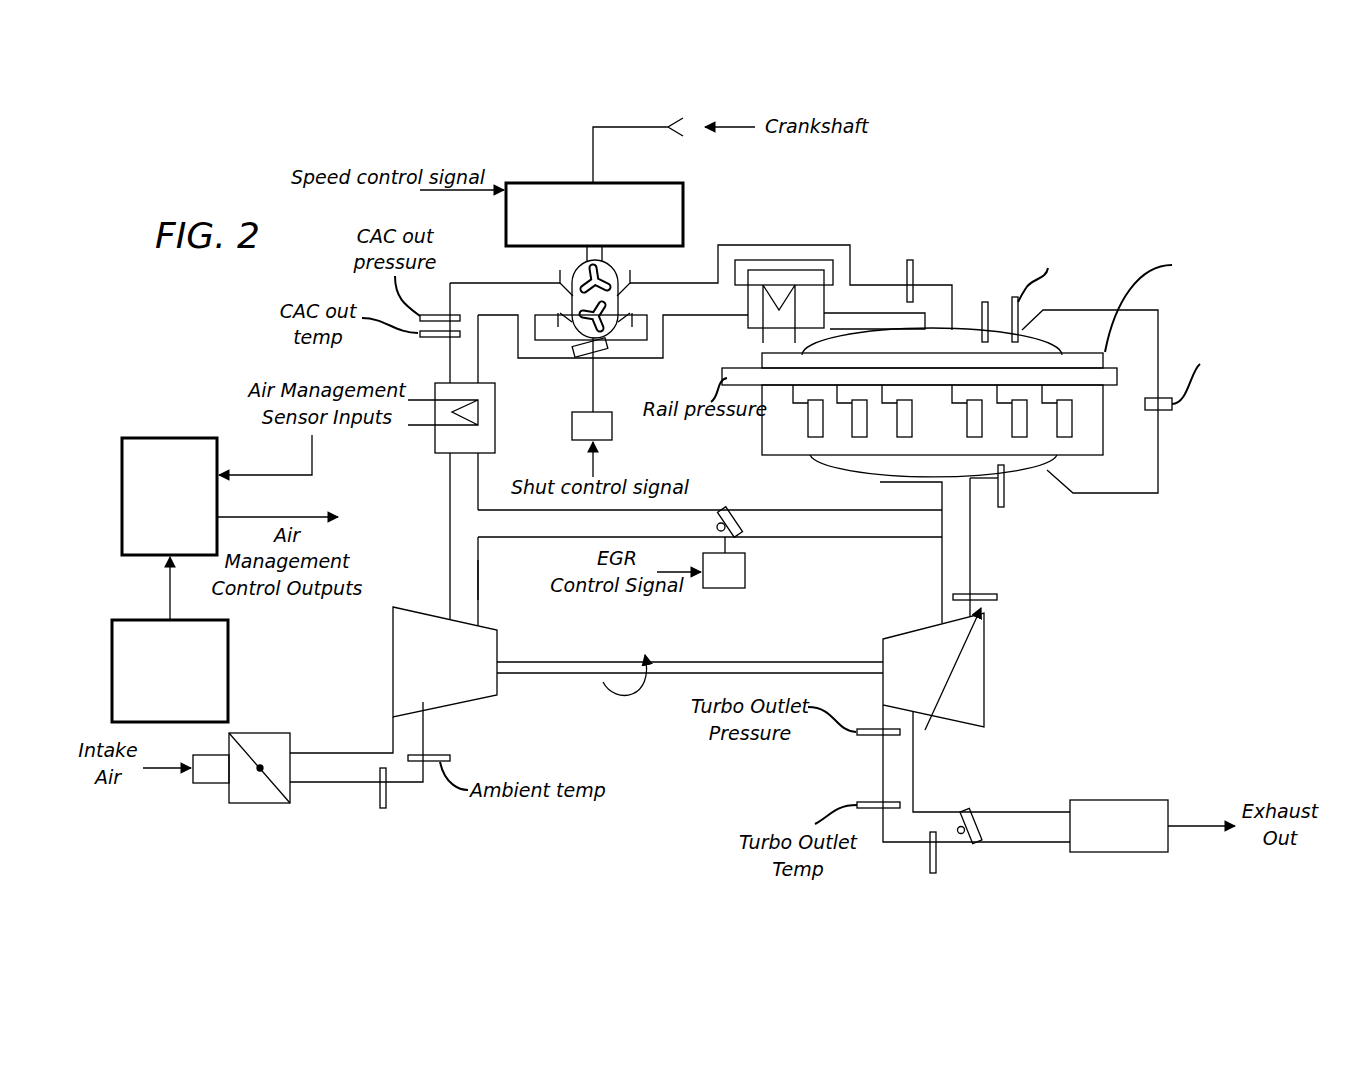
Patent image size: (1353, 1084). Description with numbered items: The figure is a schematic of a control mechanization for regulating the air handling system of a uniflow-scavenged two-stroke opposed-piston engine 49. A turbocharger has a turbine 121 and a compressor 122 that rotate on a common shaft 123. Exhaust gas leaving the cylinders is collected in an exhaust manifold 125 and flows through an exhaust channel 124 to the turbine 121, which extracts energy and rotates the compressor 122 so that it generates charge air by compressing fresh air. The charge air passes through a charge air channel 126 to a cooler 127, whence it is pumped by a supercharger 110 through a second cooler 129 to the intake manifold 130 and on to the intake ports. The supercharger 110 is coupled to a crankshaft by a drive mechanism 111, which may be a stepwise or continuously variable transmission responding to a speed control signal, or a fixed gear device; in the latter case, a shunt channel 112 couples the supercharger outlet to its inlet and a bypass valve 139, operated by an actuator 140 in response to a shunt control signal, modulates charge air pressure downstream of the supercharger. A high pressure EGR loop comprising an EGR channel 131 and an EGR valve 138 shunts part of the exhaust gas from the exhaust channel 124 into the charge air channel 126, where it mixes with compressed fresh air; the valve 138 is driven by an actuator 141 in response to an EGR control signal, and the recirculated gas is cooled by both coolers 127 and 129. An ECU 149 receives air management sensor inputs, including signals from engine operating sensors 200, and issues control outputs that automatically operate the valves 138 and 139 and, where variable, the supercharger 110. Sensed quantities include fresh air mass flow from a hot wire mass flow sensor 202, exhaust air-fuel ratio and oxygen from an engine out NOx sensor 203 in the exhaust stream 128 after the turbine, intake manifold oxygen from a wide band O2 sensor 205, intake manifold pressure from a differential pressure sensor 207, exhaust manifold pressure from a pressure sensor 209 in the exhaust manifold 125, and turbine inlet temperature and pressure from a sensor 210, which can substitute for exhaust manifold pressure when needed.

The opposed-piston engine 49 is at (1162, 196).
The supercharger 110 is at (608, 262).
The drive mechanism 111 is at (620, 183).
The shunt channel 112 is at (542, 358).
The turbine 121 is at (905, 634).
The compressor 122 is at (390, 666).
The common shaft 123 is at (752, 662).
The exhaust channel 124 is at (976, 536).
The exhaust manifold 125 is at (840, 479).
The charge air channel 126 is at (483, 557).
The cooler 127 is at (495, 418).
The exhaust stream 128 is at (1055, 812).
The cooler 129 is at (748, 320).
The intake manifold 130 is at (1022, 306).
The EGR channel 131 is at (847, 537).
The EGR valve 138 is at (737, 528).
The bypass valve 139 is at (603, 353).
The actuator 140 is at (612, 430).
The actuator 141 is at (725, 590).
The ECU 149 is at (150, 438).
The engine operating sensors 200 is at (228, 668).
The hot wire mass flow sensor 202 is at (385, 808).
The engine out NOx sensor 203 is at (925, 855).
The wide band O2 sensor 205 is at (905, 276).
The intake manifold pressure sensor 207 is at (980, 300).
The pressure sensor 209 is at (1004, 500).
The turbine inlet sensor 210 is at (997, 597).